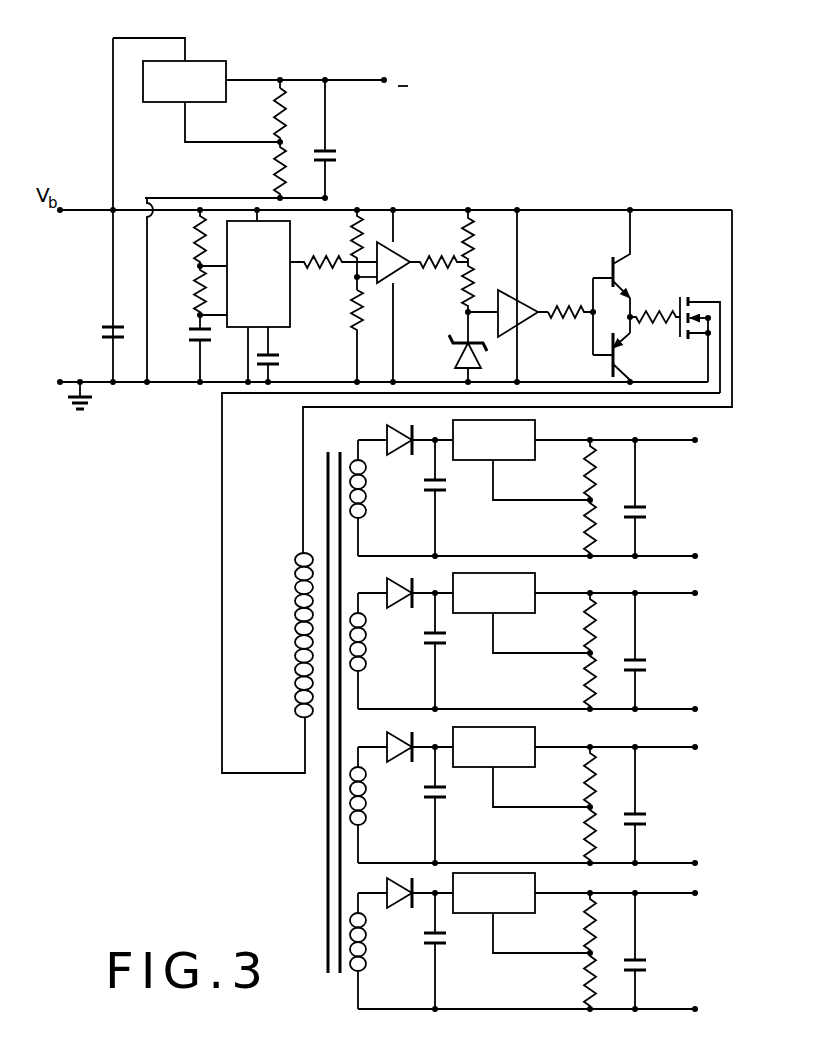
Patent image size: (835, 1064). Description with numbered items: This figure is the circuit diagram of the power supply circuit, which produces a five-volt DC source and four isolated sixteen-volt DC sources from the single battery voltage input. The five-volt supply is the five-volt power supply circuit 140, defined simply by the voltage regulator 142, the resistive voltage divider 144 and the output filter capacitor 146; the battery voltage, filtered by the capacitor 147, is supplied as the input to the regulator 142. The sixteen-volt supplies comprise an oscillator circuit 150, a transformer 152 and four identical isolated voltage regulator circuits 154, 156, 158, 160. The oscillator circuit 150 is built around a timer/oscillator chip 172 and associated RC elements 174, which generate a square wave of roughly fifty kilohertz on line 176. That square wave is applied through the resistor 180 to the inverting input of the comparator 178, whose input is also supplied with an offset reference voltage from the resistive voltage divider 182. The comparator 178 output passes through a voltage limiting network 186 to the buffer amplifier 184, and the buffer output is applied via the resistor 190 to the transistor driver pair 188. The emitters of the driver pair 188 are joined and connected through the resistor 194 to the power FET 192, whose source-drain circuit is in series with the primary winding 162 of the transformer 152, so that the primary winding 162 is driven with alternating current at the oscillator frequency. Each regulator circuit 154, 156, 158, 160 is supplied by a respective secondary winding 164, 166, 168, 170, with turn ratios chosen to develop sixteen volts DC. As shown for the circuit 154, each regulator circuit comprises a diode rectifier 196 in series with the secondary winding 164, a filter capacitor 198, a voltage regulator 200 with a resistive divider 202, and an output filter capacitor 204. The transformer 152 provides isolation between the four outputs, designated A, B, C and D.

The 5 VDC power supply circuit 140 is at (273, 101).
The voltage regulator 142 is at (170, 102).
The resistive voltage divider 144 is at (267, 153).
The output filter capacitor 146 is at (332, 147).
The capacitor 147 is at (110, 325).
The oscillator circuit 150 is at (457, 292).
The transformer 152 is at (281, 712).
The voltage regulator circuit 154 is at (564, 490).
The voltage regulator circuit 156 is at (563, 648).
The voltage regulator circuit 158 is at (564, 802).
The voltage regulator circuit 160 is at (563, 948).
The primary winding 162 is at (295, 603).
The secondary winding 164 is at (360, 495).
The secondary winding 166 is at (387, 651).
The secondary winding 168 is at (387, 805).
The secondary winding 170 is at (386, 951).
The timer/oscillator chip 172 is at (277, 308).
The RC elements 174 is at (183, 363).
The line 176 is at (298, 255).
The comparator 178 is at (400, 268).
The resistor 180 is at (325, 267).
The resistive voltage divider 182 is at (342, 298).
The buffer amplifier 184 is at (520, 310).
The voltage limiting network 186 is at (453, 312).
The transistor driver pair 188 is at (641, 288).
The resistor 190 is at (548, 316).
The power FET 192 is at (682, 294).
The resistor 194 is at (647, 323).
The diode rectifier 196 is at (397, 452).
The filter capacitor 198 is at (441, 494).
The voltage regulator 200 is at (512, 436).
The resistive divider 202 is at (586, 504).
The output filter capacitor 204 is at (643, 508).